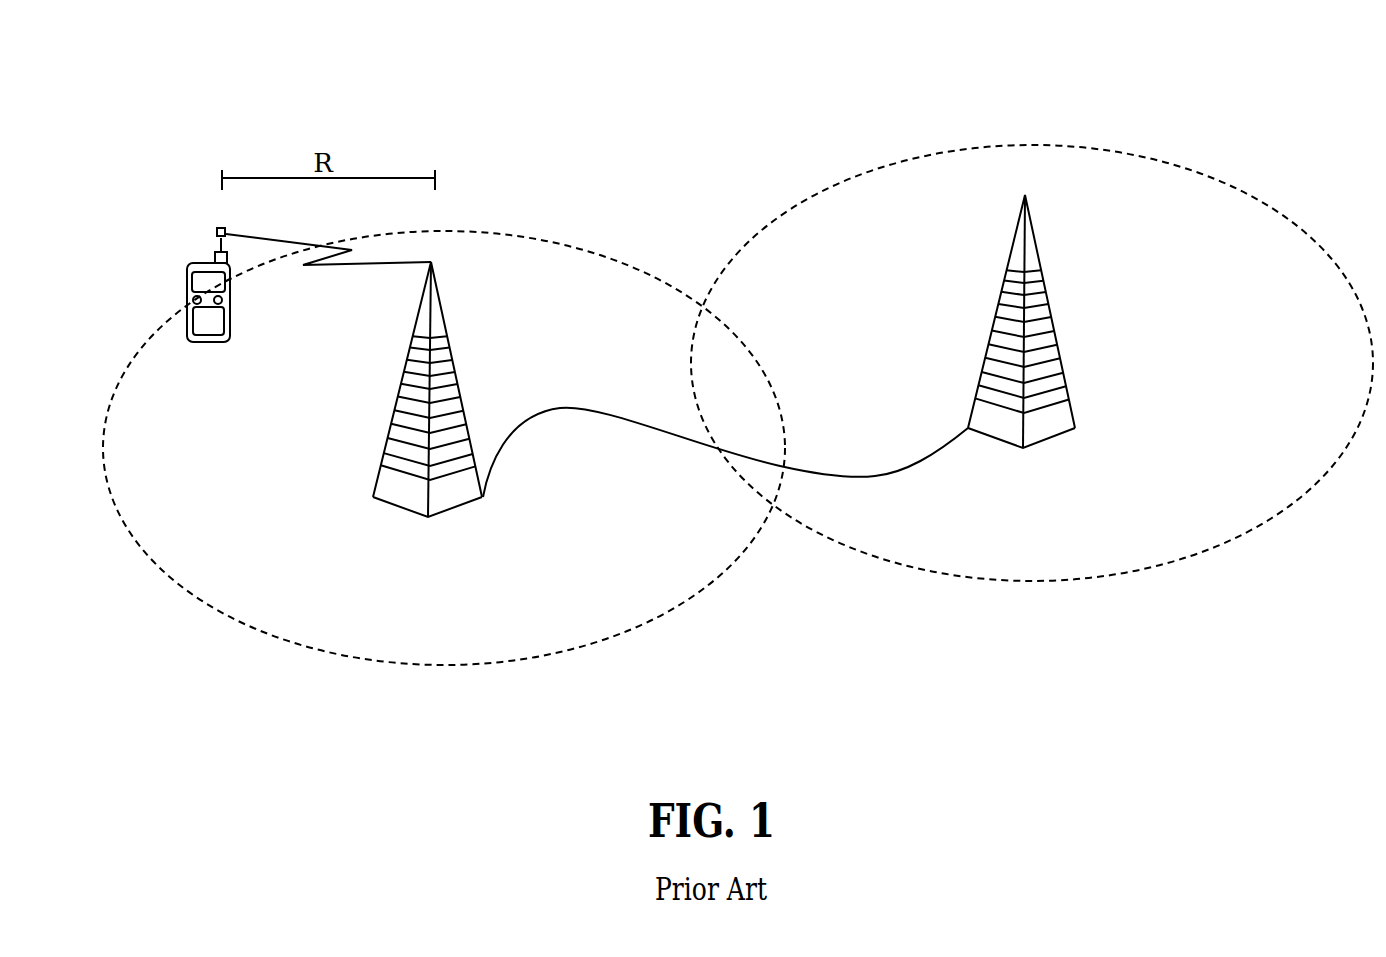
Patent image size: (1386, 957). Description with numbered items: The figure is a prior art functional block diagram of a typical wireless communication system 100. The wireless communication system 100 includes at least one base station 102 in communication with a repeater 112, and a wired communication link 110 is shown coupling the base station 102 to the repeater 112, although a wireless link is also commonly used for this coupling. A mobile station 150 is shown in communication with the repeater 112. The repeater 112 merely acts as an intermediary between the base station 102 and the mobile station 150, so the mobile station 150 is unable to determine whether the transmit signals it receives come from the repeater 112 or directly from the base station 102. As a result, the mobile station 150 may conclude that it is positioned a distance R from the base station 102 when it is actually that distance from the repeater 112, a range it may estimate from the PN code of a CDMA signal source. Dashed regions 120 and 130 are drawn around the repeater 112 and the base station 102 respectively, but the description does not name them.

The wireless communication system 100 is at (1240, 98).
The base station 102 is at (1083, 412).
The backhaul link 110 is at (867, 488).
The base station 112 is at (457, 527).
The coverage area 120 is at (258, 637).
The coverage area 130 is at (1105, 575).
The mobile station 150 is at (182, 302).